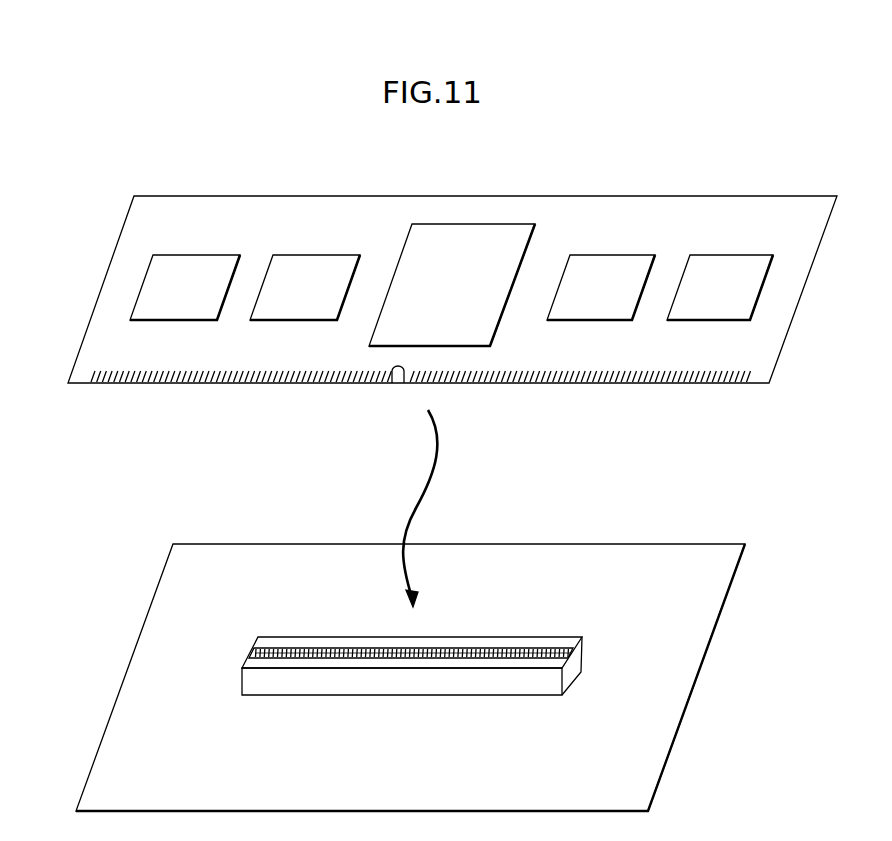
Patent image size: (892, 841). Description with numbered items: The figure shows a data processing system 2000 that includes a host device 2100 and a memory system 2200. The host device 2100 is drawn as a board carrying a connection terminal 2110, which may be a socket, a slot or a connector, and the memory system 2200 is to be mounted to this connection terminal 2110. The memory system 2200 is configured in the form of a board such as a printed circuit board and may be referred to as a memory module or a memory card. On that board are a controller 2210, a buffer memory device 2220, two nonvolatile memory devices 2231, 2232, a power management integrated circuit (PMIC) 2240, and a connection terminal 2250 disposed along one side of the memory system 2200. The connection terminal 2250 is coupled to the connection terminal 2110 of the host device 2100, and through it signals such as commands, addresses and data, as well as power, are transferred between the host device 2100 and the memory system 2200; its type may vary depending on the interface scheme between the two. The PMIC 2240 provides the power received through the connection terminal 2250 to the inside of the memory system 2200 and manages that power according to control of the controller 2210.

The data processing system 2000 is at (108, 157).
The host device 2100 is at (410, 677).
The connection terminal 2110 is at (605, 632).
The memory system 2200 is at (452, 315).
The controller 2210 is at (452, 285).
The buffer memory device 2220 is at (305, 287).
The nonvolatile memory device 2231 is at (601, 287).
The nonvolatile memory device 2232 is at (720, 287).
The power management integrated circuit 2240 is at (185, 287).
The connection terminal 2250 is at (113, 383).